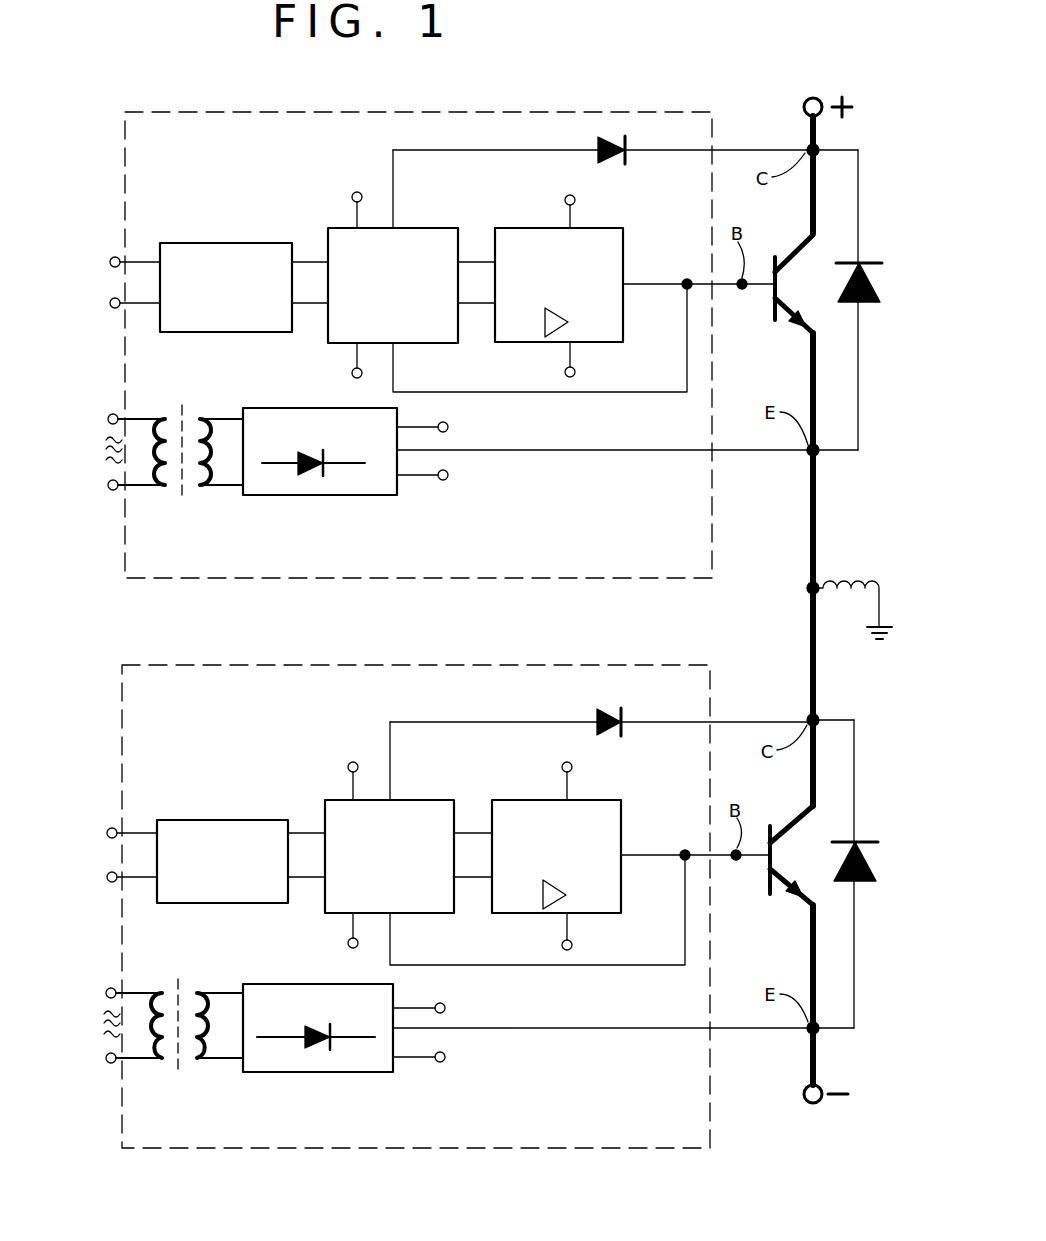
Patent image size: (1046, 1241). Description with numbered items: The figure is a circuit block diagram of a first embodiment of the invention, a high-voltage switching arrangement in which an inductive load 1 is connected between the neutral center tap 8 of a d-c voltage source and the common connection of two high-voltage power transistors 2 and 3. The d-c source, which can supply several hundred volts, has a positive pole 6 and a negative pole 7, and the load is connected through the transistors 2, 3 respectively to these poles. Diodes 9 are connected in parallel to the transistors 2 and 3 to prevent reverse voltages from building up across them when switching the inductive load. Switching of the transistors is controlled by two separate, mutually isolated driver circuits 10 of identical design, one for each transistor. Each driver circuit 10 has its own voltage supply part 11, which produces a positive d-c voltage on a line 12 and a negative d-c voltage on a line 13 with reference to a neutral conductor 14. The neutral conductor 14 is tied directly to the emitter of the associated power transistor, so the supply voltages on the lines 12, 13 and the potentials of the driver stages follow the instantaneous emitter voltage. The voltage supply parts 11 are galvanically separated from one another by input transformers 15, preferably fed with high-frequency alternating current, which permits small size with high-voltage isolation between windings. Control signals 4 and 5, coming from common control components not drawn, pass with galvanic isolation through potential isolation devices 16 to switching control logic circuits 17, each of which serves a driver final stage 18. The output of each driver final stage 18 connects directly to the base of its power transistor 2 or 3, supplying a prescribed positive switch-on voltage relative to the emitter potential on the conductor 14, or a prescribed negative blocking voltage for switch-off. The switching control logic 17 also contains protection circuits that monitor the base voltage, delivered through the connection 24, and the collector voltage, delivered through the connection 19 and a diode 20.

The inductive load 1 is at (863, 580).
The high-voltage power transistor 2 is at (772, 300).
The high-voltage power transistor 3 is at (768, 870).
The control signal 4 is at (117, 268).
The control signal 5 is at (114, 839).
The positive pole 6 is at (805, 100).
The negative pole 7 is at (804, 1087).
The neutral center tap 8 is at (870, 633).
The diode 9 is at (868, 305).
The driver circuit 10 is at (523, 550).
The voltage supply part 11 is at (262, 408).
The line 12 is at (449, 422).
The line 13 is at (441, 480).
The neutral conductor 14 is at (645, 452).
The input transformer 15 is at (200, 412).
The potential isolation device 16 is at (198, 243).
The switching control logic circuit 17 is at (415, 228).
The driver final stage 18 is at (613, 228).
The connection 19 is at (732, 150).
The diode 20 is at (596, 143).
The connection 24 is at (515, 392).